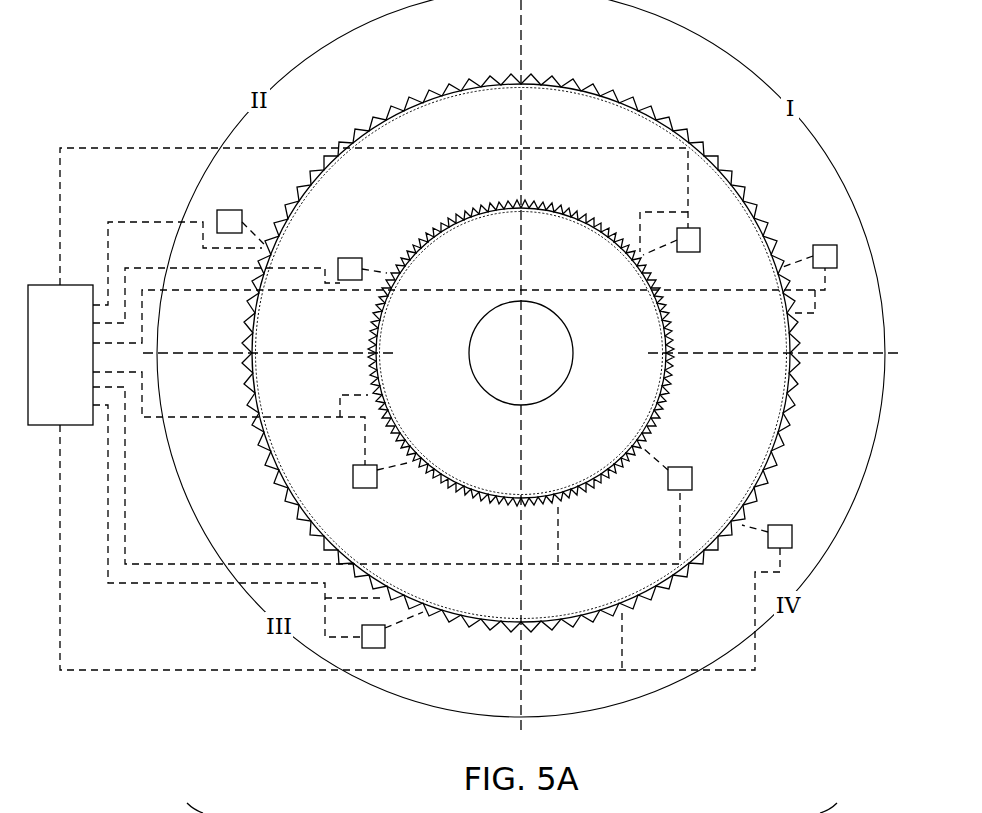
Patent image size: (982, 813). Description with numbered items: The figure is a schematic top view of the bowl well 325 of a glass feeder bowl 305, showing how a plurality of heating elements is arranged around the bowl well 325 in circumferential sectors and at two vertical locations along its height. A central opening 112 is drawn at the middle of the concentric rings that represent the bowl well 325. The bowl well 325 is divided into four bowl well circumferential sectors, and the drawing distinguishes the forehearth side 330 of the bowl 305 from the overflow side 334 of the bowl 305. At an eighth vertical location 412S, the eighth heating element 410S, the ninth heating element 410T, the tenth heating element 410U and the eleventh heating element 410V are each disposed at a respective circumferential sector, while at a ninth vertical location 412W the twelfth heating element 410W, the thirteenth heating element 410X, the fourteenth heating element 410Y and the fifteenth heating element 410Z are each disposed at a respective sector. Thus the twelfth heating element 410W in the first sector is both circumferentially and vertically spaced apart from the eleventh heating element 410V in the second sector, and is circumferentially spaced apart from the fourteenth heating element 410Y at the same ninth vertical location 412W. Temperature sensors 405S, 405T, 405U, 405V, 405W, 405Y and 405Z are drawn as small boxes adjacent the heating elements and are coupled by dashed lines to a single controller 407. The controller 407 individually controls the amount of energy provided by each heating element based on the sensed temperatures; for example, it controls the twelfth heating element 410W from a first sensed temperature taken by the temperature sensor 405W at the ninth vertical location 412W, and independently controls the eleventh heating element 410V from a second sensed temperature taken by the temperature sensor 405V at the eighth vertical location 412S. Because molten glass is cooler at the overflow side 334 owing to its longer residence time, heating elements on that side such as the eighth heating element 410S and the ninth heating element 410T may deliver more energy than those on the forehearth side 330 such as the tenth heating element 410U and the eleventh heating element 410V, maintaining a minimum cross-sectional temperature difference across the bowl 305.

The central shaft 112 is at (492, 387).
The bowl 305 is at (518, 448).
The bowl well 325 is at (392, 418).
The forehearth side 330 is at (245, 66).
The overflow side 334 is at (838, 70).
The controller 407 is at (84, 366).
The temperature sensor 405V is at (232, 208).
The temperature sensor 405Z is at (350, 256).
The temperature sensor 405S is at (818, 243).
The temperature sensor 405W is at (700, 240).
The temperature sensor 405T is at (786, 524).
The temperature sensor 405Y is at (365, 490).
The temperature sensor 405U is at (385, 640).
The eleventh heating element 410V is at (358, 127).
The fifteenth heating element 410Z is at (427, 228).
The eighth heating element 410S is at (735, 150).
The twelfth heating element 410W is at (612, 228).
The tenth heating element 410U is at (278, 497).
The fourteenth heating element 410Y is at (472, 502).
The thirteenth heating element 410X is at (588, 500).
The ninth heating element 410T is at (668, 587).
The eighth vertical location 412S is at (524, 80).
The ninth vertical location 412W is at (525, 203).